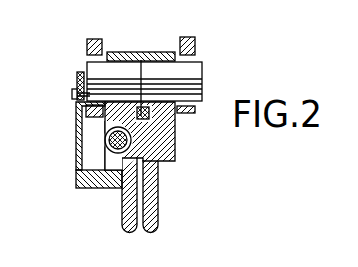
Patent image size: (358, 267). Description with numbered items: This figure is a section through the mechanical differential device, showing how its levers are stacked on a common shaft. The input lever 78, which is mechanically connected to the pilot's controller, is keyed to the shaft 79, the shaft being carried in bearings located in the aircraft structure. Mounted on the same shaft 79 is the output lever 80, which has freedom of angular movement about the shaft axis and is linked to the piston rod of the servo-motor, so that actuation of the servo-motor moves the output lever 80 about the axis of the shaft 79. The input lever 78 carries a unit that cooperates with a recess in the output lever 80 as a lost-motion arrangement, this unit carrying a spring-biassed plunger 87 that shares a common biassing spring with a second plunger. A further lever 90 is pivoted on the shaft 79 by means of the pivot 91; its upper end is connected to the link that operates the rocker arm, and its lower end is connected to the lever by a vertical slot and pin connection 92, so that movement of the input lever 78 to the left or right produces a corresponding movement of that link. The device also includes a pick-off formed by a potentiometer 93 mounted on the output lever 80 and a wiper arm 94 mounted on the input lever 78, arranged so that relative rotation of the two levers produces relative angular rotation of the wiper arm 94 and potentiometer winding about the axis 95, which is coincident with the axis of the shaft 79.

The input lever 78 is at (159, 207).
The shaft 79 is at (203, 73).
The output lever 80 is at (122, 211).
The spring-biassed plunger 87 is at (128, 152).
The lever 90 is at (77, 128).
The pivot 91 is at (72, 93).
The vertical slot and pin connection 92 is at (76, 181).
The potentiometer 93 is at (150, 118).
The wiper arm 94 is at (141, 60).
The axis 95 is at (72, 66).